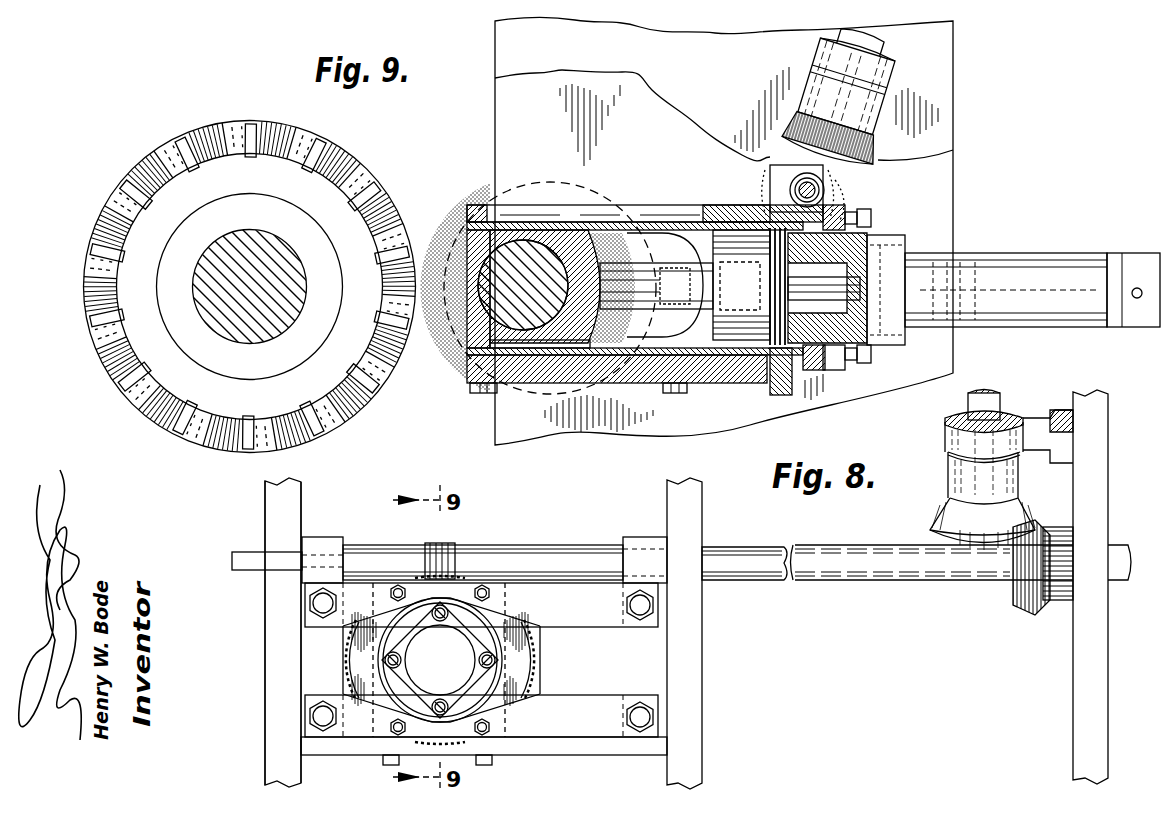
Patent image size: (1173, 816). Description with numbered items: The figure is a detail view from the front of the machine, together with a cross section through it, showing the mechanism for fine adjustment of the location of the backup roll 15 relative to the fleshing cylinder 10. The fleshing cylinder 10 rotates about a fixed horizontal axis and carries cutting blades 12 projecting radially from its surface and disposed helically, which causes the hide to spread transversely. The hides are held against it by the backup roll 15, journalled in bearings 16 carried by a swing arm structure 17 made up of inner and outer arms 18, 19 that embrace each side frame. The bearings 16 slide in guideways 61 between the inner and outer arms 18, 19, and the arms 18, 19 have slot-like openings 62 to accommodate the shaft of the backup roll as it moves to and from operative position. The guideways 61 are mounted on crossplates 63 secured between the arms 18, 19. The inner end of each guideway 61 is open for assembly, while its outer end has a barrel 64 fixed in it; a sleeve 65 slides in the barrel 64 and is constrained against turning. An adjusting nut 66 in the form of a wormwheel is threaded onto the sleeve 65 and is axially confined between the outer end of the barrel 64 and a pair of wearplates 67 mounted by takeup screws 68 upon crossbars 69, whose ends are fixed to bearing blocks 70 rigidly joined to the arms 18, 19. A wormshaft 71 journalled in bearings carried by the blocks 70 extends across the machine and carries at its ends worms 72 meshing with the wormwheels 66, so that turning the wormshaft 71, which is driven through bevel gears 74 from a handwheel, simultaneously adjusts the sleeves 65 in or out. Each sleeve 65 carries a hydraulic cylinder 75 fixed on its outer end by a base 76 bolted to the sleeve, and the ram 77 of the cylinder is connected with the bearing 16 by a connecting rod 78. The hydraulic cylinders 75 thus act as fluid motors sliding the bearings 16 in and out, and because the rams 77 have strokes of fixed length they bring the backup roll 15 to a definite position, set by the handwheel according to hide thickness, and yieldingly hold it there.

In FIG. 9, the fleshing cylinder 10 is at (323, 183).
In FIG. 9, the cutting blades 12 is at (135, 177).
In FIG. 8, the backup roll 15 is at (456, 202).
In FIG. 8, the bearings 16 is at (537, 242).
In FIG. 8, the swing arm structure 17 is at (980, 128).
In FIG. 8, the inner arms 18 is at (513, 42).
In FIG. 8, the outer arms 19 is at (278, 626).
In FIG. 8, the guideways 61 is at (625, 216).
In FIG. 8, the slot-like openings 62 is at (655, 232).
In FIG. 8, the crossplates 63 is at (724, 382).
In FIG. 8, the barrel 64 is at (780, 382).
In FIG. 8, the sleeve 65 is at (722, 240).
In FIG. 8, the adjusting nut 66 is at (790, 358).
In FIG. 8, the wearplates 67 is at (840, 196).
In FIG. 8, the takeup screws 68 is at (872, 218).
In FIG. 8, the crossbars 69 is at (845, 210).
In FIG. 8, the bearing blocks 70 is at (825, 177).
In FIG. 8, the wormshaft 71 is at (798, 192).
In FIG. 8, the worms 72 is at (772, 174).
In FIG. 8, the bevel gears 74 is at (776, 146).
In FIG. 8, the hydraulic cylinders 75 is at (1026, 256).
In FIG. 8, the bases 76 is at (906, 249).
In FIG. 8, the rams 77 is at (968, 262).
In FIG. 8, the connecting rods 78 is at (645, 274).